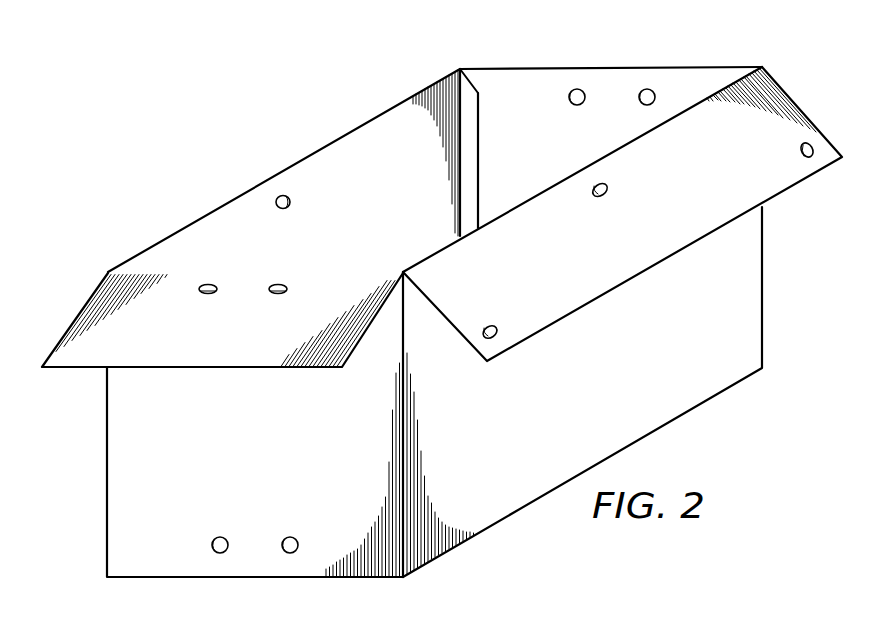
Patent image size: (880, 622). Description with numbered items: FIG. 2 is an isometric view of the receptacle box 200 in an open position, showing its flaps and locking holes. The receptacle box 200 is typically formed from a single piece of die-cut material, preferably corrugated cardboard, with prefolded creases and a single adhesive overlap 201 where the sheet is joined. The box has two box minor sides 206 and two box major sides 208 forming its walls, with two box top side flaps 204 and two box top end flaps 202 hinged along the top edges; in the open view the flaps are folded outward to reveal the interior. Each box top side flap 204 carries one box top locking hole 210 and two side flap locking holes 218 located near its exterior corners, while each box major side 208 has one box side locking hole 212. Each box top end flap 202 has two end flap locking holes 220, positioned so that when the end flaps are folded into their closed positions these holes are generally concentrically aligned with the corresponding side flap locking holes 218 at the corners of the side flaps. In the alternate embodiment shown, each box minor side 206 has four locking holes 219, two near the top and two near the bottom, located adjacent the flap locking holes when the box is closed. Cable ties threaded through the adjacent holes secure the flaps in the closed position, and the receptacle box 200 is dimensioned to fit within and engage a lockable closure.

The receptacle box 200 is at (310, 83).
The adhesive overlap 201 is at (480, 156).
The box top end flap 202 is at (75, 370).
The box top side flap 204 is at (800, 182).
The box minor side 206 is at (118, 461).
The box major side 208 is at (698, 398).
The box top locking hole 210 is at (608, 192).
The box side locking hole 212 is at (291, 203).
The side flap locking hole 218 is at (799, 149).
The locking hole 219 is at (577, 89).
The end flap locking hole 220 is at (206, 296).